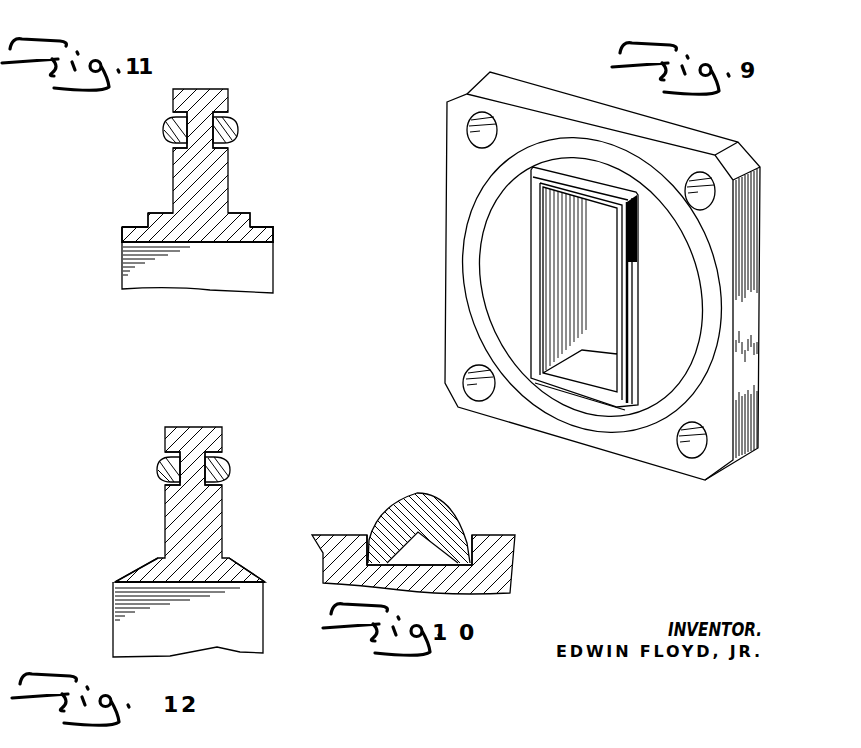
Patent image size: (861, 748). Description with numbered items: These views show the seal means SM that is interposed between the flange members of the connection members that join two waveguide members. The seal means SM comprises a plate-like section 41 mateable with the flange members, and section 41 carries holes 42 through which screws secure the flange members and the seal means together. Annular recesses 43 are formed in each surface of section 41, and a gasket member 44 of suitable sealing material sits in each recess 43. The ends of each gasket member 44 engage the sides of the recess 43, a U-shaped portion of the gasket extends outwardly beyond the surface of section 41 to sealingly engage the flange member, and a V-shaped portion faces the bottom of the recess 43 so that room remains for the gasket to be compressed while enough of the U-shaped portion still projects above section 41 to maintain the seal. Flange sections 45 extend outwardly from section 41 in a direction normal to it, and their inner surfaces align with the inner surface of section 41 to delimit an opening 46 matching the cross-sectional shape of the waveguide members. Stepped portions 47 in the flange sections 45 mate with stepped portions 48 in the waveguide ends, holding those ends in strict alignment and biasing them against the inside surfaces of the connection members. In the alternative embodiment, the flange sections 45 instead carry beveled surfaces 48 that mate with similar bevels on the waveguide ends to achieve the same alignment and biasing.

In FIG. 11, the section 41 is at (193, 89).
In FIG. 12, the section 41 is at (206, 504).
In FIG. 10, the section 41 is at (498, 565).
In FIG. 9, the section 41 is at (452, 180).
In FIG. 9, the holes 42 is at (466, 131).
In FIG. 11, the annular recesses 43 is at (183, 138).
In FIG. 12, the annular recesses 43 is at (193, 468).
In FIG. 10, the annular recesses 43 is at (422, 552).
In FIG. 11, the gasket member 44 is at (166, 126).
In FIG. 12, the gasket member 44 is at (193, 469).
In FIG. 10, the gasket member 44 is at (398, 506).
In FIG. 9, the gasket member 44 is at (474, 280).
In FIG. 11, the flange sections 45 is at (122, 232).
In FIG. 12, the flange sections 45 is at (153, 570).
In FIG. 9, the flange sections 45 is at (633, 264).
In FIG. 11, the opening 46 is at (250, 280).
In FIG. 9, the opening 46 is at (552, 318).
In FIG. 11, the stepped portions 47 is at (148, 215).
In FIG. 9, the stepped portions 47 is at (620, 351).
In FIG. 12, the stepped portions / beveled surfaces 48 is at (127, 575).
In FIG. 12, the seal means SM is at (206, 518).
In FIG. 9, the seal means SM is at (586, 271).